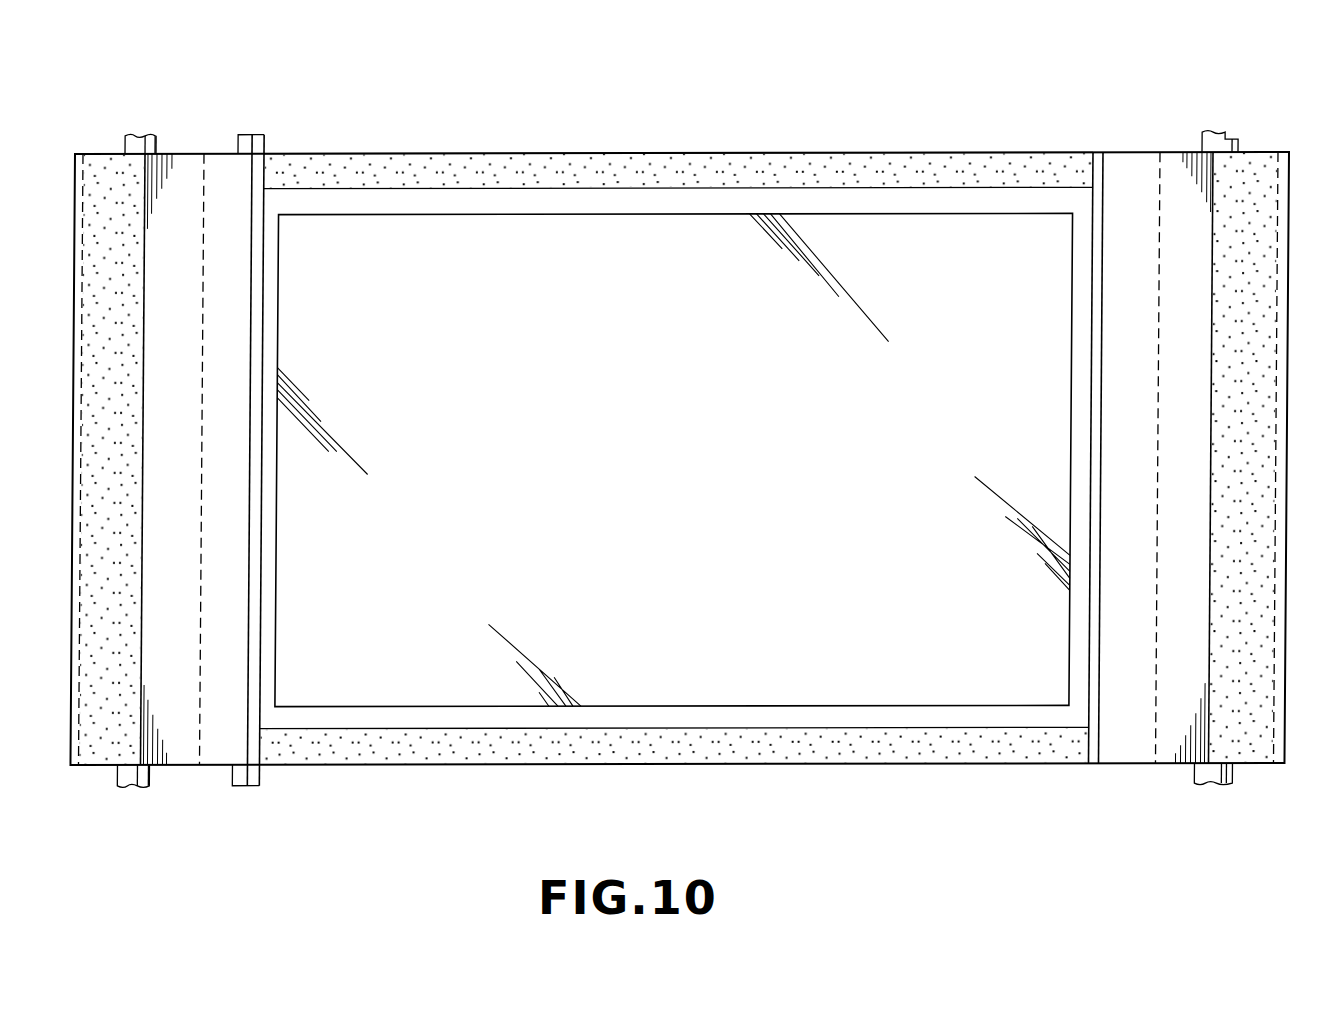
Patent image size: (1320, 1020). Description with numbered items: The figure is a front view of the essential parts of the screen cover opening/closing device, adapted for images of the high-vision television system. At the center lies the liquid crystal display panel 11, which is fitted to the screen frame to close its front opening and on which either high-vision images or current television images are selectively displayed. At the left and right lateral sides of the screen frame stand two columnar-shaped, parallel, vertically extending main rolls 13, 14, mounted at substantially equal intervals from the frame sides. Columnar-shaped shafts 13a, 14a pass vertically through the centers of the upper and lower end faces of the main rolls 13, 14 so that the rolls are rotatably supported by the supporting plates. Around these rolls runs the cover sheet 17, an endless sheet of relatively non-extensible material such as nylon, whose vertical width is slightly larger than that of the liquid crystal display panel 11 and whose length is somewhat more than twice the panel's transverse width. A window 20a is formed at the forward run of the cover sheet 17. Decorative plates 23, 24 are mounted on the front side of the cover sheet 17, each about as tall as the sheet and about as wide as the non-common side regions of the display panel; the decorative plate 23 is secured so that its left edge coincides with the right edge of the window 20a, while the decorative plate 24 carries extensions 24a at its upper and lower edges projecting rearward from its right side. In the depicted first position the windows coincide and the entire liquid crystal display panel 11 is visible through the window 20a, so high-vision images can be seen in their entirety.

The liquid crystal display panel 11 is at (876, 235).
The main roll 13 is at (1160, 243).
The shaft 13a is at (1210, 136).
The main roll 14 is at (206, 191).
The shaft 14a is at (137, 136).
The cover sheet 17 is at (548, 153).
The window 20a is at (423, 190).
The decorative plate 23 is at (1109, 303).
The decorative plate 24 is at (240, 350).
The extension 24a is at (242, 136).